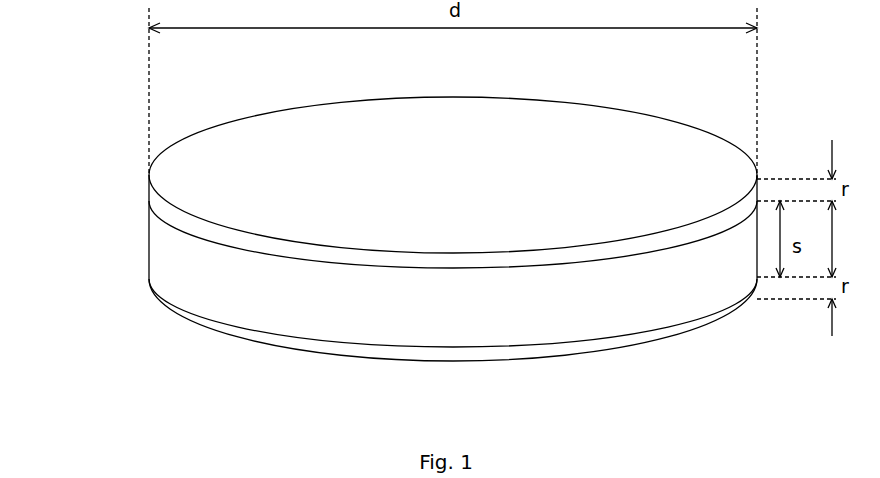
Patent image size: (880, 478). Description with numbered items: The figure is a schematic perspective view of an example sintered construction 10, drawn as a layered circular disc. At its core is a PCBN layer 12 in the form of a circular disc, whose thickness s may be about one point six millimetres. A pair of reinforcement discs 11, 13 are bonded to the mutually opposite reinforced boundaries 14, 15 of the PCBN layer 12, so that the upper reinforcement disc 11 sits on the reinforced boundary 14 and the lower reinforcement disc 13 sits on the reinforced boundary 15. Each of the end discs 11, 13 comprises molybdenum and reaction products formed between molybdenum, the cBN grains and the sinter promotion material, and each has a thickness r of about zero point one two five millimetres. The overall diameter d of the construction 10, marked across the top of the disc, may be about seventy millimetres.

The sintered construction 10 is at (120, 95).
The reinforcement disc 11 is at (172, 170).
The PCBN layer 12 is at (175, 257).
The reinforcement disc 13 is at (255, 338).
The reinforced boundary 14 is at (165, 218).
The reinforced boundary 15 is at (176, 303).